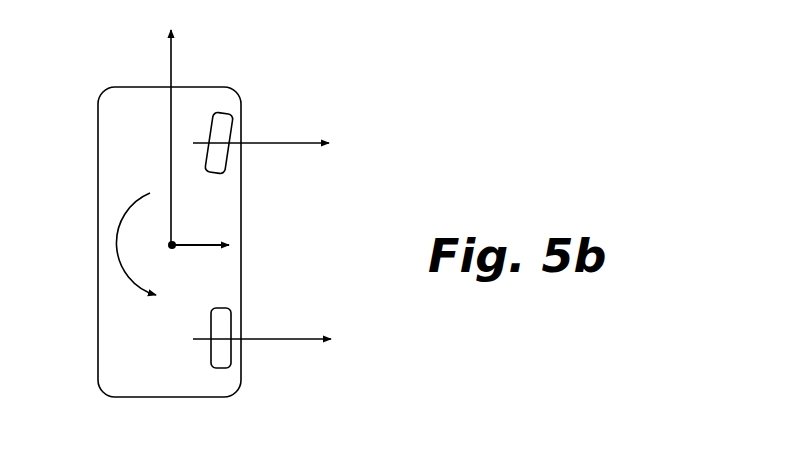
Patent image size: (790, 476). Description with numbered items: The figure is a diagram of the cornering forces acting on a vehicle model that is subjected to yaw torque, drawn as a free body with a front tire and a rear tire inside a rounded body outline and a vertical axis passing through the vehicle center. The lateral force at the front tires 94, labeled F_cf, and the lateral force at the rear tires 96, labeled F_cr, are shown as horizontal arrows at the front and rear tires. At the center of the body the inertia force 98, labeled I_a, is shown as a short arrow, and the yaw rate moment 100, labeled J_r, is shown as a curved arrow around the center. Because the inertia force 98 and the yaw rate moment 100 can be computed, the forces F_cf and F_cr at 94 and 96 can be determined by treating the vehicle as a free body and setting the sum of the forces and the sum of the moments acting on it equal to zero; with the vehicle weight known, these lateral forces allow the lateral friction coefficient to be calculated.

The lateral force at the front tires 94 is at (270, 143).
The lateral force at the rear tires 96 is at (280, 338).
The inertia force 98 is at (208, 242).
The yaw rate moment 100 is at (118, 258).